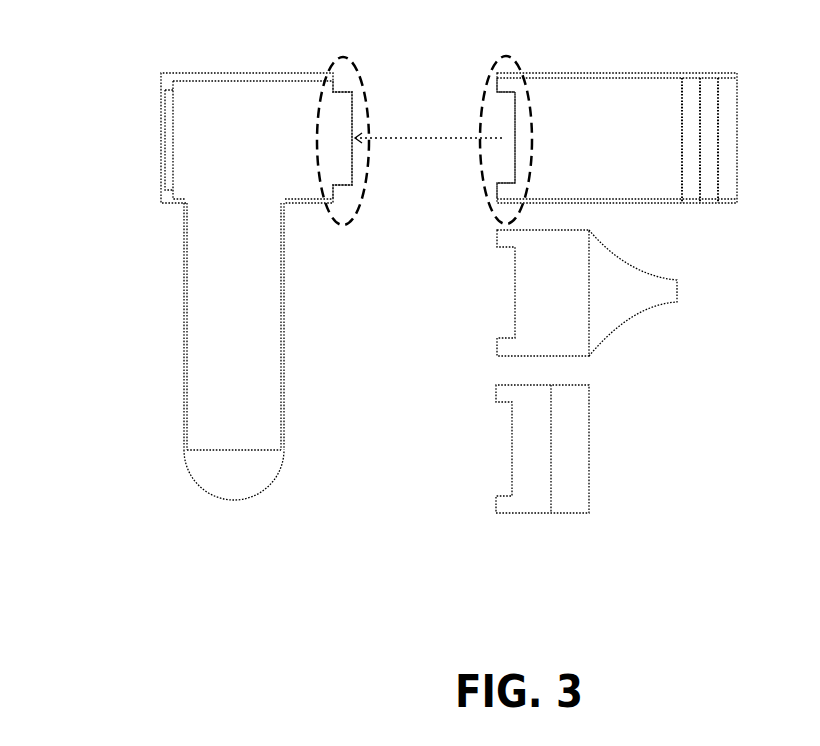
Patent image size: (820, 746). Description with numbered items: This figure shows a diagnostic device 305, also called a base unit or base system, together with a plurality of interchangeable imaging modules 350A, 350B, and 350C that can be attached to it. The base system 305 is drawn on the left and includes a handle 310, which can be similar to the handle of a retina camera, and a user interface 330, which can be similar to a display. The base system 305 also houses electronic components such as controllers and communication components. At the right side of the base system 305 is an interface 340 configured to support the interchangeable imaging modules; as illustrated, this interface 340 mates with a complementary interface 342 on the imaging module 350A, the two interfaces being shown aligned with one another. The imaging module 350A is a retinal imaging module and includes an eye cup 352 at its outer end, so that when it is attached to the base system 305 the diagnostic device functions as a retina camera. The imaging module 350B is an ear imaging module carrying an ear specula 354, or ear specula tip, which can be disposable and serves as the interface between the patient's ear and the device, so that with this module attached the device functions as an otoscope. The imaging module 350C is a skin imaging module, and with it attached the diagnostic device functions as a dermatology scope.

The diagnostic device 305 is at (183, 271).
The handle 310 is at (198, 315).
The user interface 330 is at (163, 145).
The interface 340 is at (343, 127).
The interface 342 is at (506, 126).
The imaging module 350A is at (649, 112).
The imaging module 350B is at (594, 292).
The imaging module 350C is at (542, 470).
The eye cup 352 is at (727, 87).
The ear specula 354 is at (610, 292).